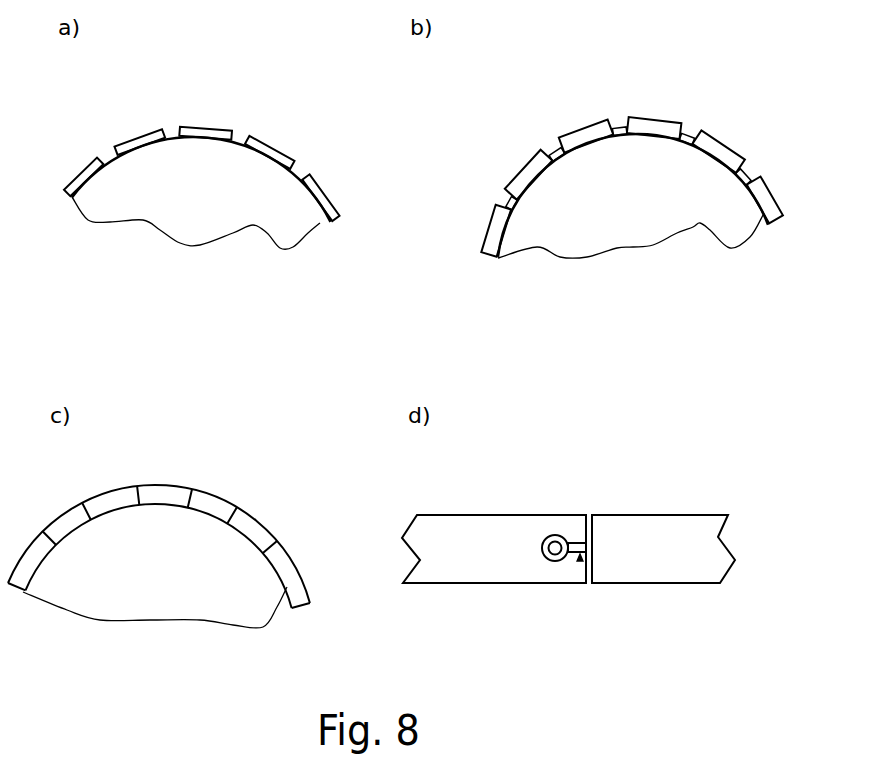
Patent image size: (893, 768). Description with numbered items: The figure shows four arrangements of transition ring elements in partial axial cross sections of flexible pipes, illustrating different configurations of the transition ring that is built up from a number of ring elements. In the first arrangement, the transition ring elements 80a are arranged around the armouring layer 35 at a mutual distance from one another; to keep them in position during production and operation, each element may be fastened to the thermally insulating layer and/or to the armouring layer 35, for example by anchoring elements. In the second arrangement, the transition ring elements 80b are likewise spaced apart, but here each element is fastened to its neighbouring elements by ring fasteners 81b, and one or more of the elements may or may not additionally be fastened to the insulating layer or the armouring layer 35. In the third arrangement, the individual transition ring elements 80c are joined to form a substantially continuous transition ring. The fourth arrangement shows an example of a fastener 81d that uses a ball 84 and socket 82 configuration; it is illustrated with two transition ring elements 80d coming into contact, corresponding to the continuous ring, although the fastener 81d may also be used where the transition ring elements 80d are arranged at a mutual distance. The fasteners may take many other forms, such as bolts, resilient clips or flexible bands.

The transition ring elements 80a is at (313, 197).
The transition ring elements 80b is at (725, 147).
The ring fasteners 81b is at (688, 140).
The transition ring elements 80c is at (287, 570).
The transition ring elements 80d is at (683, 530).
The fastener 81d is at (580, 560).
The socket 82 is at (541, 548).
The ball 84 is at (555, 554).
The armouring layer 35 is at (275, 607).